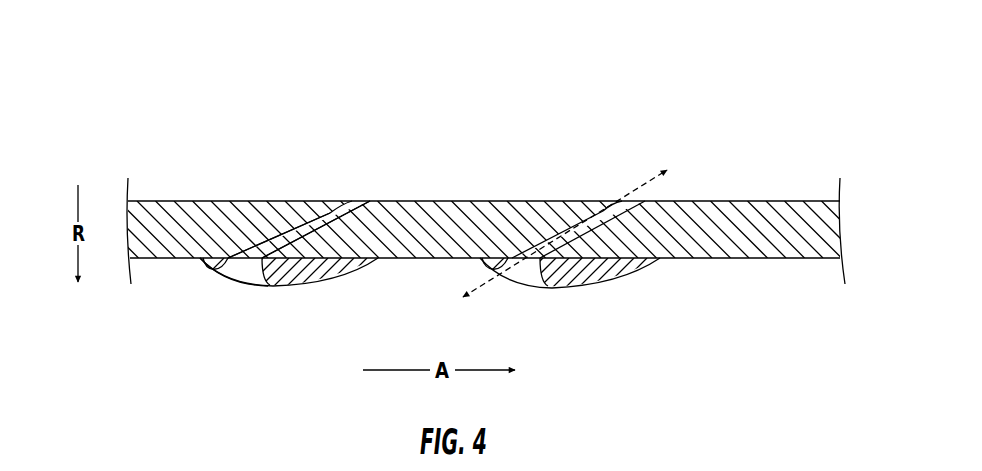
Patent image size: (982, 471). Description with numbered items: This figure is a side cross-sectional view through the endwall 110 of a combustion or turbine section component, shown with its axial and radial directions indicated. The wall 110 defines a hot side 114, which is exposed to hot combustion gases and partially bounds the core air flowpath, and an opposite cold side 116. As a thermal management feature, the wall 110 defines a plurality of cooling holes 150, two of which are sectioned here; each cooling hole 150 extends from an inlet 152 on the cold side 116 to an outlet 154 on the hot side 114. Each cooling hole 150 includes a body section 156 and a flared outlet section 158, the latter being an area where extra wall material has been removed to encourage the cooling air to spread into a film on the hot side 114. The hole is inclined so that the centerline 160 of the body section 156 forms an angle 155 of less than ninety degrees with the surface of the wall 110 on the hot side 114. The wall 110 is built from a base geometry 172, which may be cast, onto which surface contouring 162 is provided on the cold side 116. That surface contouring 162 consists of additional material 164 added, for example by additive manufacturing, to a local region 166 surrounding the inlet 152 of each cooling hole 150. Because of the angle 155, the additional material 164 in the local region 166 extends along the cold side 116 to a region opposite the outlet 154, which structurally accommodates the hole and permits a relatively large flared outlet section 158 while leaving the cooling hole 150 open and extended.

The endwall 110 is at (480, 222).
The hot side 114 is at (487, 198).
The cold side 116 is at (410, 287).
The cooling hole 150 is at (293, 227).
The inlet 152 is at (238, 279).
The outlet 154 is at (354, 198).
The angle 155 is at (648, 200).
The body section 156 is at (266, 242).
The flared outlet section 158 is at (358, 213).
The centerline 160 is at (642, 198).
The surface contouring 162 is at (307, 297).
The additional material 164 is at (203, 262).
The local region 166 is at (265, 297).
The base geometry 172 is at (776, 224).